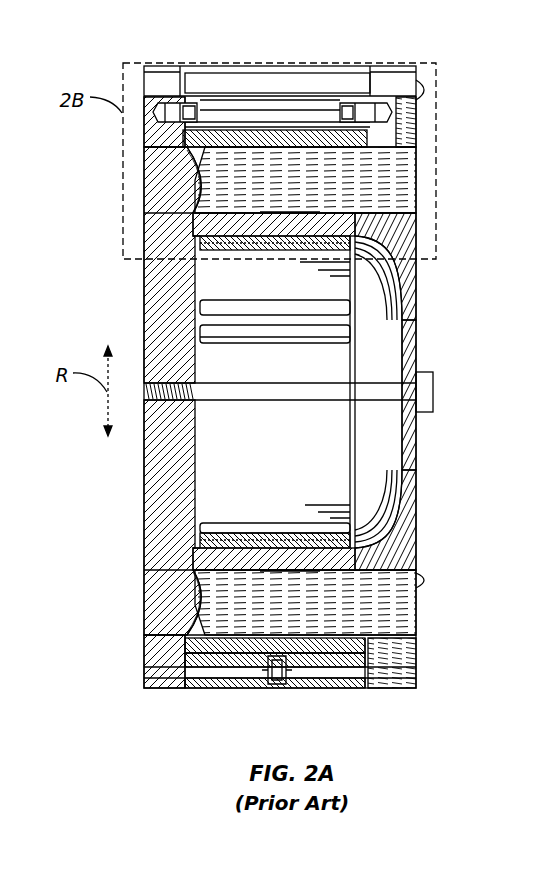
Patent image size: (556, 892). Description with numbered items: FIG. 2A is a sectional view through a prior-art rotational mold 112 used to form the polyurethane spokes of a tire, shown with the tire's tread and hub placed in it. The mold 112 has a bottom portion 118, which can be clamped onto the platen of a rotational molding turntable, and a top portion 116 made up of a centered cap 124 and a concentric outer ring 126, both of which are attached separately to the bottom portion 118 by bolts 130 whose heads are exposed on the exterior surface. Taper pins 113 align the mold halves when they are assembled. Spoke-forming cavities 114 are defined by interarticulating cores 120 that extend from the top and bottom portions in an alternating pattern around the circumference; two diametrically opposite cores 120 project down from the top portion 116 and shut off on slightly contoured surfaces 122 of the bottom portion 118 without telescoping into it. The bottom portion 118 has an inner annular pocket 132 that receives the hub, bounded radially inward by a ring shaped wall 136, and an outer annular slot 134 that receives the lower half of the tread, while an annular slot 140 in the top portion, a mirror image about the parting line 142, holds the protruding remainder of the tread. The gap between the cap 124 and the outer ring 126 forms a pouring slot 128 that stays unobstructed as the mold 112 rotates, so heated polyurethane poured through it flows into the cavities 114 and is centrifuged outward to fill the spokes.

The mold 112 is at (427, 649).
The taper pins 113 is at (430, 90).
The cavities 114 is at (250, 212).
The top portion 116 is at (419, 472).
The bottom portion 118 is at (145, 470).
The cores 120 is at (318, 190).
The contoured surfaces 122 is at (198, 184).
The cap 124 is at (416, 306).
The outer ring 126 is at (418, 612).
The pouring slot 128 is at (408, 232).
The bolts 130 is at (434, 392).
The inner annular pocket 132 is at (208, 240).
The outer annular slot 134 is at (238, 127).
The ring shaped wall 136 is at (293, 240).
The annular slot 140 is at (330, 118).
The parting line 142 is at (275, 112).